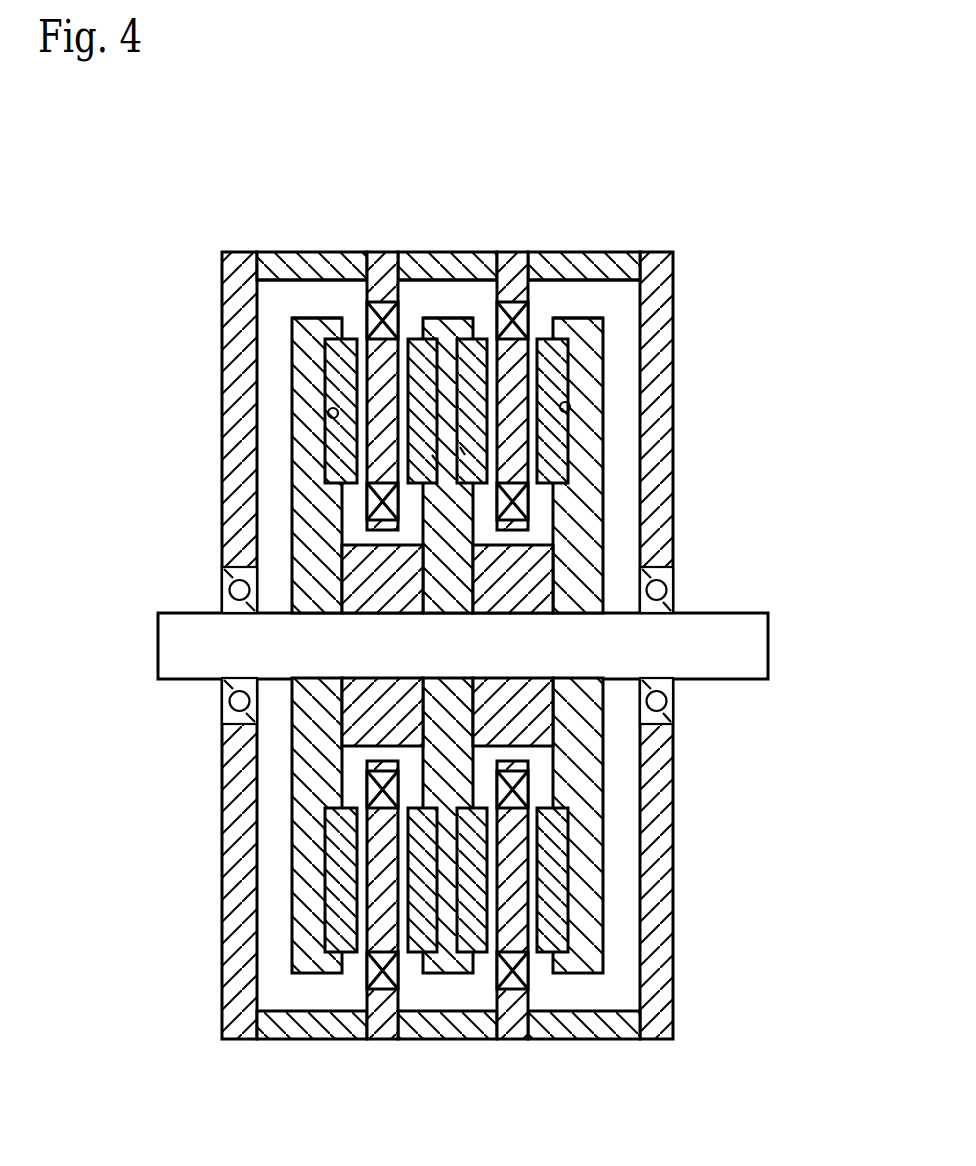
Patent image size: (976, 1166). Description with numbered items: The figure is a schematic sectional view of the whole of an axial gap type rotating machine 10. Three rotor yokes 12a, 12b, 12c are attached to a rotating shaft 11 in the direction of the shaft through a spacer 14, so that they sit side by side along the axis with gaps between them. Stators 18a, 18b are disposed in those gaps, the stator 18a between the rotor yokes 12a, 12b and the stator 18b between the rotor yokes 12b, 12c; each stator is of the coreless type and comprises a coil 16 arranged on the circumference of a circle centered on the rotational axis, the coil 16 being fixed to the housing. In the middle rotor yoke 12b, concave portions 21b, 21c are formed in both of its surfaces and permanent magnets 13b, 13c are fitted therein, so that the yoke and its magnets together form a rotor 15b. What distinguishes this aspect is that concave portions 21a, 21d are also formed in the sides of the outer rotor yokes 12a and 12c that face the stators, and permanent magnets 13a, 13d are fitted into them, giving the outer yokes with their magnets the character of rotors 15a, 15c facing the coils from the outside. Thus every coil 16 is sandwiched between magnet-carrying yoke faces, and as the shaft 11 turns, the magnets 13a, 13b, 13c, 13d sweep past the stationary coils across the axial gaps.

The rotating electric machine 10 is at (686, 170).
The rotating shaft 11 is at (747, 647).
The rotor yoke 12a is at (303, 337).
The rotor yoke 12b is at (466, 338).
The rotor yoke 12c is at (597, 334).
The permanent magnet 13a is at (337, 392).
The permanent magnet 13b is at (413, 338).
The permanent magnet 13c is at (482, 338).
The permanent magnet 13d is at (563, 363).
The spacer 14 is at (355, 560).
The gap 15a is at (320, 294).
The rotor 15b is at (452, 294).
The gap 15c is at (602, 296).
The coil 16 is at (367, 972).
The stator 18a is at (387, 1055).
The stator 18b is at (522, 1055).
The concave portion 21a is at (333, 415).
The concave portion 21b is at (438, 460).
The concave portion 21c is at (460, 447).
The concave portion 21d is at (566, 408).